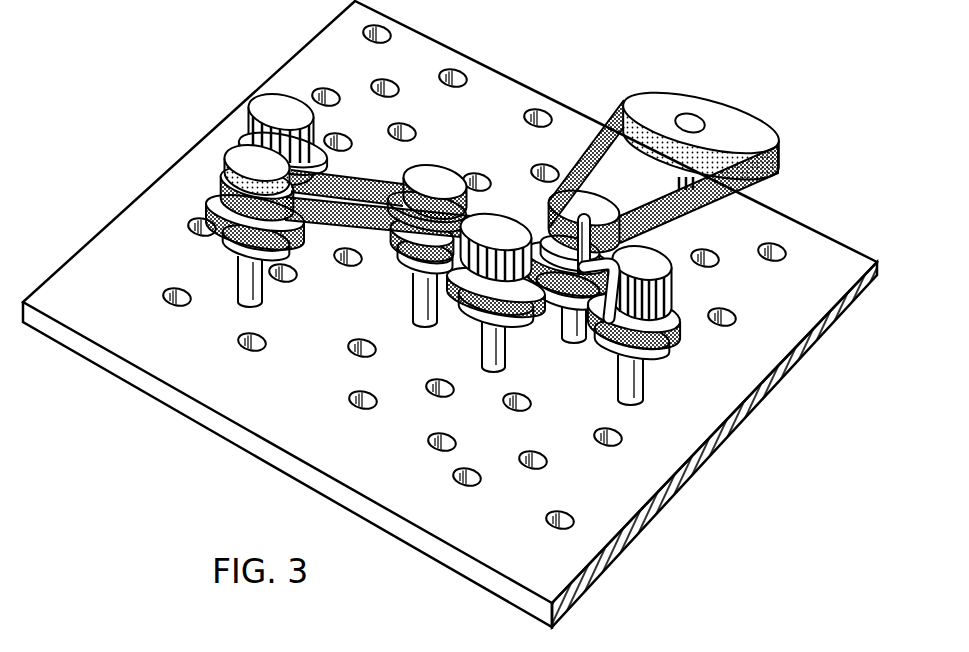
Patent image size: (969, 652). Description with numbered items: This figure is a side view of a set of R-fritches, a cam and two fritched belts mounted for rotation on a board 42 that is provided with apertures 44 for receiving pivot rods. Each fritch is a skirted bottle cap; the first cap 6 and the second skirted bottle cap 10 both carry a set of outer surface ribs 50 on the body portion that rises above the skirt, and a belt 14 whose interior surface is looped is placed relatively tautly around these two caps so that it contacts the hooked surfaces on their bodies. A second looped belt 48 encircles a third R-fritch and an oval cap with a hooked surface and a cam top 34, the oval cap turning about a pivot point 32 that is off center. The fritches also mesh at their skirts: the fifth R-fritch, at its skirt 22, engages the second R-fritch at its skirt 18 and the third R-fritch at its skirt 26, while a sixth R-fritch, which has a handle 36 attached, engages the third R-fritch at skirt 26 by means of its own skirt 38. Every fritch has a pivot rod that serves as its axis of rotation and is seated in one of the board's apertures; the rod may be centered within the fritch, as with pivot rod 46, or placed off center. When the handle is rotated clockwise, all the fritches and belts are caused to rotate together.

The post 6 is at (282, 107).
The second skirted bottle cap 10 is at (245, 158).
The belt 14 is at (367, 173).
The skirt 18 is at (392, 252).
The skirt 22 is at (453, 313).
The skirt 26 is at (554, 300).
The pivot point 32 is at (692, 110).
The cam top 34 is at (723, 136).
The crank handle 36 is at (592, 330).
The skirt 38 is at (683, 328).
The board 42 is at (798, 237).
The holes 44 is at (247, 346).
The pivot rod 46 is at (240, 277).
The pivot rod 48 is at (672, 191).
The outer surface ribs 50 is at (312, 133).